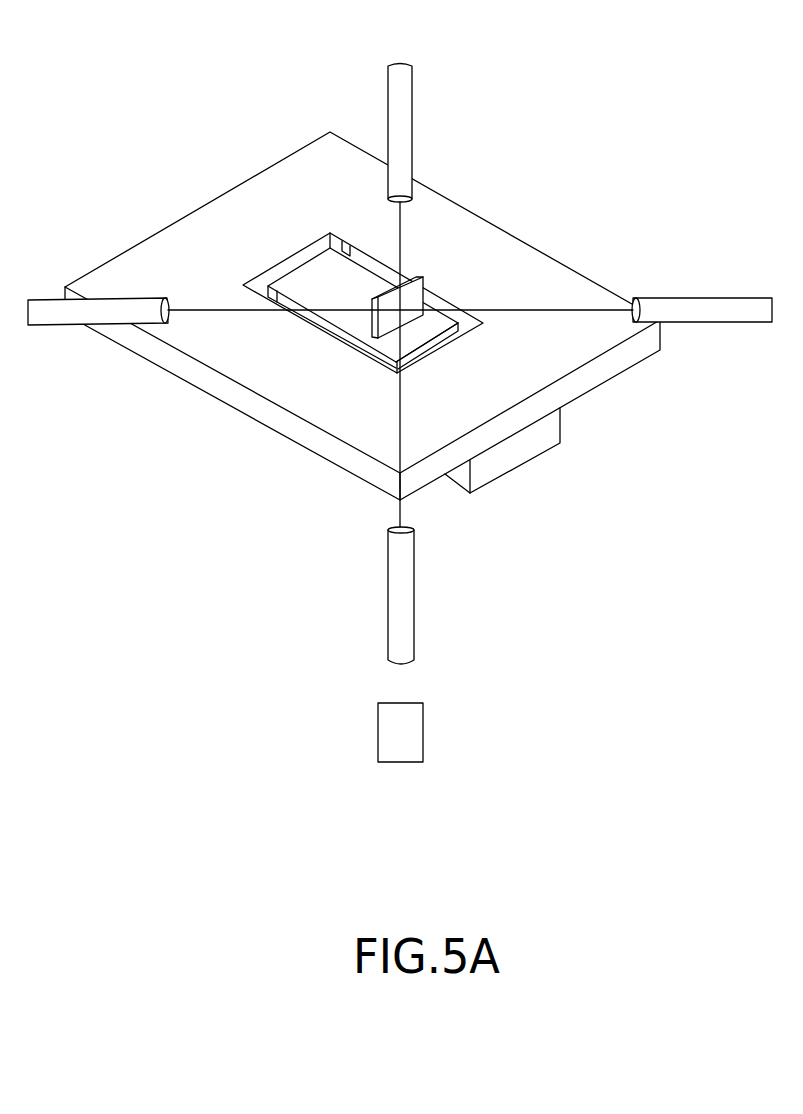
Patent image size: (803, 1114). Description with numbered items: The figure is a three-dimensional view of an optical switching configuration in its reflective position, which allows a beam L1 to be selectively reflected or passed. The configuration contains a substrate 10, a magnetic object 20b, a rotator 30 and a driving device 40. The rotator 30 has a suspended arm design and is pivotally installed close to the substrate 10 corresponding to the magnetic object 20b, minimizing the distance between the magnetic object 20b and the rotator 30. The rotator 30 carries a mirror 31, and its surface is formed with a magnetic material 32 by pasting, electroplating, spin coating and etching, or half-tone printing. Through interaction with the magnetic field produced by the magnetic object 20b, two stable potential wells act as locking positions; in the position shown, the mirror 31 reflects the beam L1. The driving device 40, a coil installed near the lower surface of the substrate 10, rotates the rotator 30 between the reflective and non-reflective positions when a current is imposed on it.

The substrate 10 is at (478, 232).
The magnetic object 20b is at (510, 457).
The rotator 30 is at (375, 268).
The mirror 31 is at (413, 279).
The magnetic material 32 is at (417, 333).
The driving device 40 is at (387, 737).
The beam L1 is at (400, 442).